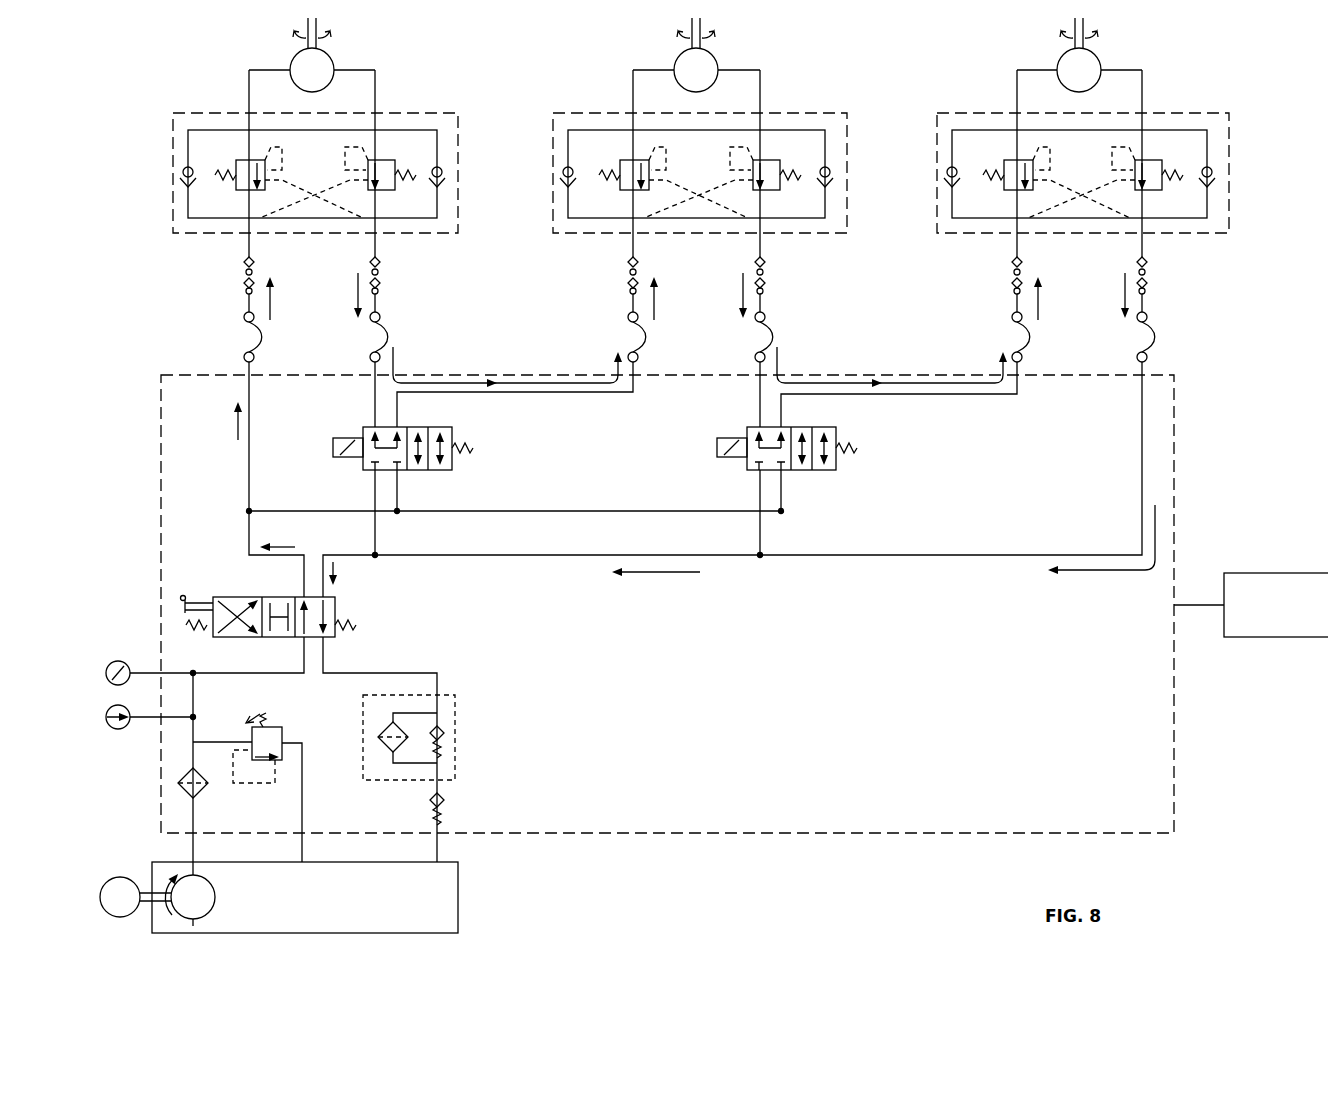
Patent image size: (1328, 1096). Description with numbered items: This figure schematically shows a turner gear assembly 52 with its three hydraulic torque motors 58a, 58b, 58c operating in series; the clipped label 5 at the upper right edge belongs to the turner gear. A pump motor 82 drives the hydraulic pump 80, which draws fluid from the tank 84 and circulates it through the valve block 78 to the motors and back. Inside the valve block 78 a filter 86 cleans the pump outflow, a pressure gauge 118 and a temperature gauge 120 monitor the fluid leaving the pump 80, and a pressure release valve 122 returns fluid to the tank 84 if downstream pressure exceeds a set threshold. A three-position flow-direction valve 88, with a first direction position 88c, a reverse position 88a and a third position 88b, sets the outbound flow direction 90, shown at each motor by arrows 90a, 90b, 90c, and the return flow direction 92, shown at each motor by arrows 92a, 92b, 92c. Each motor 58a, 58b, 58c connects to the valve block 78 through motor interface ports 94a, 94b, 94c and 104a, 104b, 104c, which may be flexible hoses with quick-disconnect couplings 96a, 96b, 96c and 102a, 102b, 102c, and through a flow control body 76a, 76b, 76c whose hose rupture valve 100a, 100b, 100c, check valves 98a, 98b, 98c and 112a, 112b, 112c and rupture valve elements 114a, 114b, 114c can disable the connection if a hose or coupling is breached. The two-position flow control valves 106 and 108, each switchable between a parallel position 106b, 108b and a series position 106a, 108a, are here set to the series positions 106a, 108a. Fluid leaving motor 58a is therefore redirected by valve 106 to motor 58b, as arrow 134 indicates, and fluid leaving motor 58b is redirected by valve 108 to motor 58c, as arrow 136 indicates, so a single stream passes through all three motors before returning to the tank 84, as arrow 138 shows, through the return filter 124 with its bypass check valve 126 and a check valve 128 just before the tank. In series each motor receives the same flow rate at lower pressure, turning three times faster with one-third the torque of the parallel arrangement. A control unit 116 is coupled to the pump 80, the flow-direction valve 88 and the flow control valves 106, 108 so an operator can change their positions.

The lift system 5 is at (1305, 86).
The turner gear assembly 52 is at (1249, 796).
The hydraulic torque motor 58a is at (328, 63).
The hydraulic torque motor 58b is at (712, 63).
The hydraulic torque motor 58c is at (1095, 63).
The flow control body 76a is at (200, 113).
The flow control body 76b is at (582, 113).
The flow control body 76c is at (965, 113).
The valve block 78 is at (161, 426).
The hydraulic pump 80 is at (216, 897).
The pump motor 82 is at (102, 898).
The hydraulic fluid tank 84 is at (385, 913).
The fluid filter 86 is at (177, 783).
The flow-direction valve 88 is at (284, 635).
The flow-direction valve position 88a is at (232, 637).
The third valve position 88b is at (273, 637).
The first direction fluid flow position 88c is at (316, 639).
The first fluid flow direction 90 is at (238, 432).
The outbound flow arrow 90a is at (271, 320).
The outbound flow arrow 90b is at (655, 320).
The outbound flow arrow 90c is at (1039, 320).
The return fluid flow direction 92 is at (340, 569).
The return flow arrow 92a is at (358, 280).
The return flow arrow 92b is at (743, 280).
The return flow arrow 92c is at (1125, 280).
The motor interface port 94a is at (256, 336).
The motor interface port 94b is at (640, 336).
The motor interface port 94c is at (1024, 336).
The quick-disconnect coupling 96a is at (243, 273).
The quick-disconnect coupling 96b is at (627, 273).
The quick-disconnect coupling 96c is at (1011, 273).
The check valve 98a is at (186, 166).
The check valve 98b is at (566, 166).
The check valve 98c is at (950, 166).
The hose rupture valve 100a is at (412, 142).
The hose rupture valve 100b is at (796, 142).
The hose rupture valve 100c is at (1178, 142).
The quick-disconnect coupling 102a is at (383, 272).
The quick-disconnect coupling 102b is at (768, 272).
The quick-disconnect coupling 102c is at (1150, 272).
The motor interface port 104a is at (384, 336).
The motor interface port 104b is at (769, 336).
The motor interface port 104c is at (1152, 336).
The flow control valve 106 is at (381, 427).
The series flow position 106a is at (372, 470).
The parallel flow position 106b is at (428, 472).
The flow control valve 108 is at (765, 427).
The series flow position 108a is at (756, 470).
The parallel flow position 108b is at (812, 472).
The check valve 112a is at (442, 181).
The check valve 112b is at (827, 181).
The check valve 112c is at (1209, 181).
The hose rupture valve 114a is at (214, 199).
The hose rupture valve 114b is at (600, 201).
The hose rupture valve 114c is at (985, 201).
The control unit 116 is at (1280, 573).
The pressure gauge 118 is at (106, 673).
The temperature gauge 120 is at (106, 717).
The pressure release valve 122 is at (281, 718).
The fluid filter 124 is at (376, 753).
The bypass check valve 126 is at (445, 720).
The check valve 128 is at (445, 803).
The series flow arrow 134 is at (542, 383).
The series flow arrow 136 is at (927, 383).
The return flow arrow 138 is at (1108, 571).